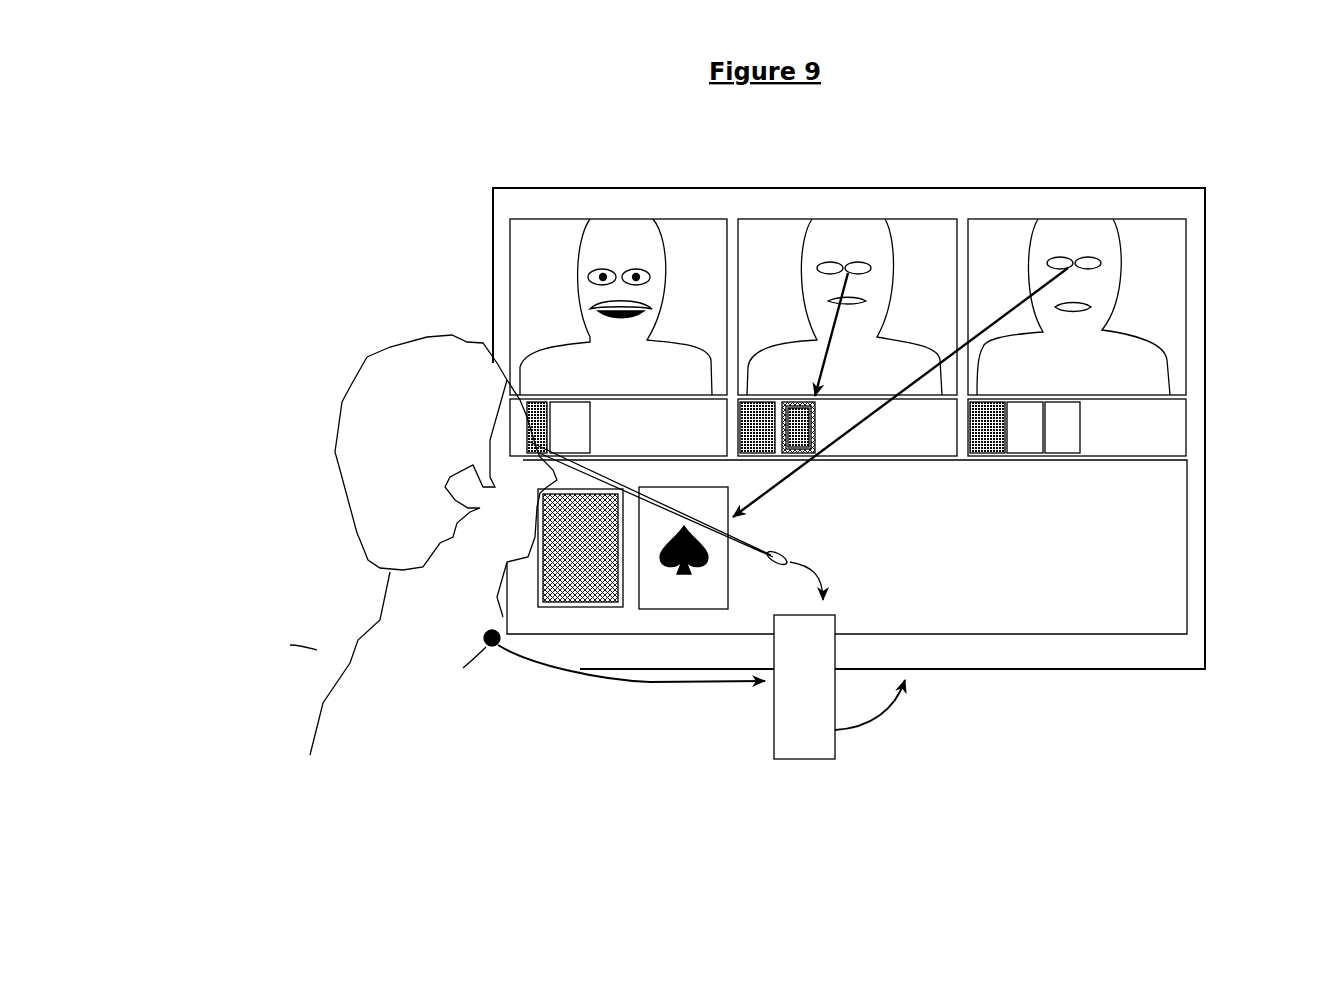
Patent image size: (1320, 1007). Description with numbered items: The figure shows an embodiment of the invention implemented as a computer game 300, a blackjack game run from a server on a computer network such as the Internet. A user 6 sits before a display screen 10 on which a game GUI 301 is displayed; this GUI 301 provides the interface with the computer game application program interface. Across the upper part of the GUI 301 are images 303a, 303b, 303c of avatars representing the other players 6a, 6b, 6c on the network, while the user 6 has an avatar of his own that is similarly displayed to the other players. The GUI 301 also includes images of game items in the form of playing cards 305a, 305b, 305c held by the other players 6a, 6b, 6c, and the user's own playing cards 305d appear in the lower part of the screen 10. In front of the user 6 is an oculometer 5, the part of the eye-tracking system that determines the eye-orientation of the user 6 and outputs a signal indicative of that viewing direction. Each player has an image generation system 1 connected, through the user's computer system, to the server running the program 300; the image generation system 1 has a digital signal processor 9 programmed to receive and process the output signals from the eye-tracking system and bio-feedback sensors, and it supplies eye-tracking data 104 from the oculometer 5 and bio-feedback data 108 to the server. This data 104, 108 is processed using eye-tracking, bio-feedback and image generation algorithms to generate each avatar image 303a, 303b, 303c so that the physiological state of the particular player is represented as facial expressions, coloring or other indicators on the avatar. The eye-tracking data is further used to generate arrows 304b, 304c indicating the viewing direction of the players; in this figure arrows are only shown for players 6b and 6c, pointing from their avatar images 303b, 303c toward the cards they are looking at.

The game 300 is at (305, 185).
The display screen 10 is at (1082, 188).
The user 6 is at (446, 476).
The other player 6a is at (484, 297).
The other player 6b is at (836, 247).
The other player 6c is at (1132, 241).
The avatar image 303a is at (520, 329).
The avatar image 303b is at (756, 262).
The avatar image 303c is at (1162, 272).
The arrow 304b is at (820, 377).
The arrow 304c is at (1017, 302).
The playing cards 305a is at (566, 393).
The playing cards 305b is at (836, 428).
The playing cards 305c is at (1112, 435).
The playing cards 305d is at (518, 594).
The game GUI 301 is at (1083, 610).
The oculometer 5 is at (786, 553).
The eye-tracking data 104 is at (827, 588).
The digital signal processor 9 is at (810, 735).
The bio-feedback data 108 is at (638, 677).
The image generation system 1 is at (517, 793).